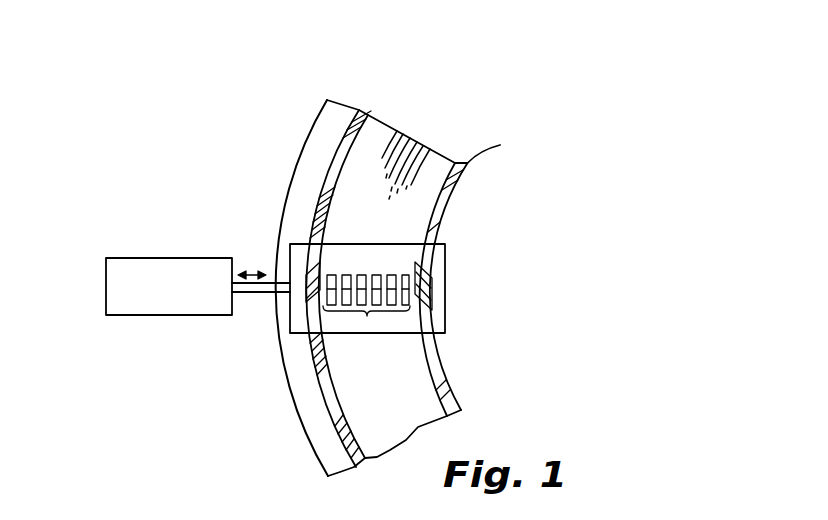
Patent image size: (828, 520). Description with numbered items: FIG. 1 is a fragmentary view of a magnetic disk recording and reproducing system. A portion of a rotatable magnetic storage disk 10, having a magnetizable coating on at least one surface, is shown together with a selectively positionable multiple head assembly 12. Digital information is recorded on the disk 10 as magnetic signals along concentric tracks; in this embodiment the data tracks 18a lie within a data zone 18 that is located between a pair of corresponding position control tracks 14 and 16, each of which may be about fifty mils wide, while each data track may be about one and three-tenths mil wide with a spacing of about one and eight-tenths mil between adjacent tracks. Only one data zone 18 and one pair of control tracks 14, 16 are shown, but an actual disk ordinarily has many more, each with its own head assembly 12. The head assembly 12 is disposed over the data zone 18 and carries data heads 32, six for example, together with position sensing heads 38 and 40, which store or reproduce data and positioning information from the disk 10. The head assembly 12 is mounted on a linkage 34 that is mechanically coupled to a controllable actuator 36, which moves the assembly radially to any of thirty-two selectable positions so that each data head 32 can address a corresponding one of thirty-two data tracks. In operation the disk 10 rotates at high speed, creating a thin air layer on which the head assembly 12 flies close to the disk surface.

The magnetic storage disk 10 is at (303, 142).
The multiple head assembly 12 is at (299, 241).
The position control track 14 is at (366, 112).
The position control track 16 is at (467, 162).
The data zone 18 is at (497, 107).
The data tracks 18a is at (404, 118).
The data heads 32 is at (370, 314).
The linkage 34 is at (262, 295).
The actuator 36 is at (230, 243).
The position sensing head 38 is at (327, 262).
The position sensing head 40 is at (417, 263).